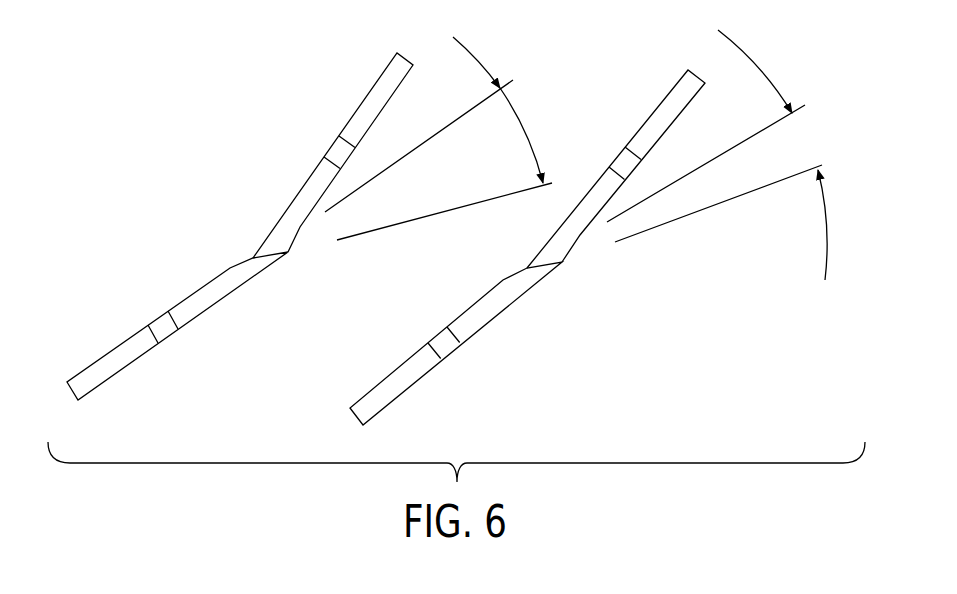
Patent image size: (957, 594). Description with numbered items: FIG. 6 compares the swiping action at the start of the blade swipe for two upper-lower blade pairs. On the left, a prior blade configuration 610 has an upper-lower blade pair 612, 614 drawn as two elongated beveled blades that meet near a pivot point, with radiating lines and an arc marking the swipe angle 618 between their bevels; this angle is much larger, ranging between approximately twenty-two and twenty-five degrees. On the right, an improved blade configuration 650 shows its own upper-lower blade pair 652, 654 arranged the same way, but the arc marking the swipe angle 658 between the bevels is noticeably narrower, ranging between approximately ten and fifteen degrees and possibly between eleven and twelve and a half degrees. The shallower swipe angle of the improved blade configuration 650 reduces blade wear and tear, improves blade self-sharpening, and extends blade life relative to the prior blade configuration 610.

The prior blade configuration 610 is at (194, 211).
The upper-lower blade pair (prior configuration), first blade 612 is at (127, 353).
The upper-lower blade pair (prior configuration), second blade 614 is at (317, 174).
The swipe angle 618 is at (541, 118).
The improved blade configuration 650 is at (618, 294).
The upper-lower blade pair (improved configuration), first blade 652 is at (460, 328).
The upper-lower blade pair (improved configuration), second blade 654 is at (652, 128).
The swipe angle 658 is at (803, 140).